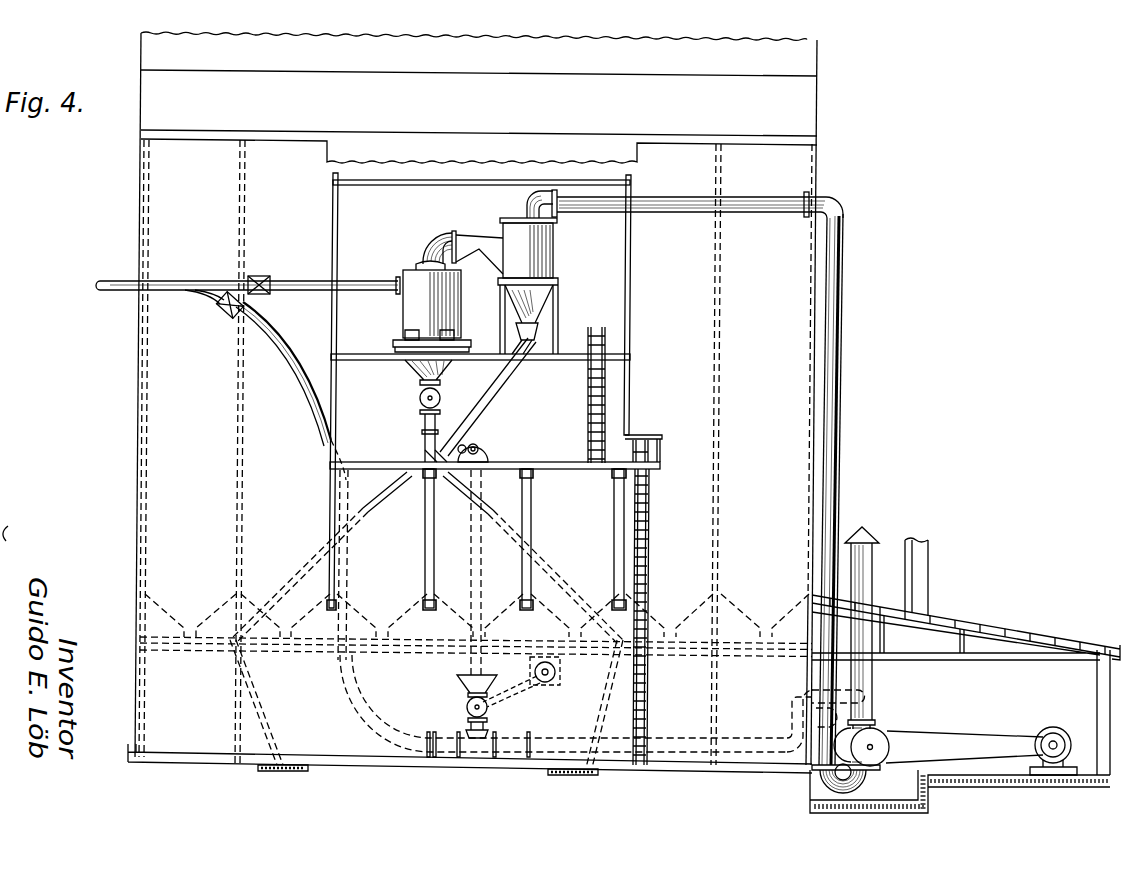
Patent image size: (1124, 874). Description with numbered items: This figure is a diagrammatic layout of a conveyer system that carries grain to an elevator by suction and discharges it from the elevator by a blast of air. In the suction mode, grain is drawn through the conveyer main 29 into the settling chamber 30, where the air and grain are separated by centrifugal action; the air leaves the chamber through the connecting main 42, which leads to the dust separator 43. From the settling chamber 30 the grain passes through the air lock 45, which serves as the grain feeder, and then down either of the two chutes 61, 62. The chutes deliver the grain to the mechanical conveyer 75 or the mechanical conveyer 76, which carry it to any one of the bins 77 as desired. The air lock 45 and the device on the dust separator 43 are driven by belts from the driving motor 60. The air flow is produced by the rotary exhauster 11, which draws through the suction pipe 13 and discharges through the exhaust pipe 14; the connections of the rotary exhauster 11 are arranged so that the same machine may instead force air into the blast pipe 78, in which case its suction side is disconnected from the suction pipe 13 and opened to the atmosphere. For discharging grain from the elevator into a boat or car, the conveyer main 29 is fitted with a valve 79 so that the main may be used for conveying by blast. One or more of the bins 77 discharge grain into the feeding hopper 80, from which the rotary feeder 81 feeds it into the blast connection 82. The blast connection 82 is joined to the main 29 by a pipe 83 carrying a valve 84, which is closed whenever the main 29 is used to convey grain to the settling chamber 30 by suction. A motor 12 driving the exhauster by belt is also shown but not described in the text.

The rotary exhauster 11 is at (880, 747).
The fan motor 12 is at (1053, 728).
The suction pipe 13 is at (831, 334).
The exhaust pipe 14 is at (870, 565).
The conveyer main 29 is at (218, 283).
The settling chamber 30 is at (415, 310).
The connecting main 42 is at (438, 250).
The dust separator 43 is at (537, 250).
The air lock 45 is at (420, 399).
The driving motor 60 is at (487, 443).
The chute 61 is at (398, 476).
The chute 62 is at (465, 482).
The mechanical conveyer 75 is at (290, 771).
The mechanical conveyer 76 is at (576, 775).
The bins 77 is at (265, 580).
The blast pipe 78 is at (740, 745).
The valve 79 is at (262, 280).
The feeding hopper 80 is at (518, 691).
The rotary feeder 81 is at (486, 710).
The blast connection 82 is at (477, 745).
The pipe 83 is at (315, 426).
The valve 84 is at (226, 308).